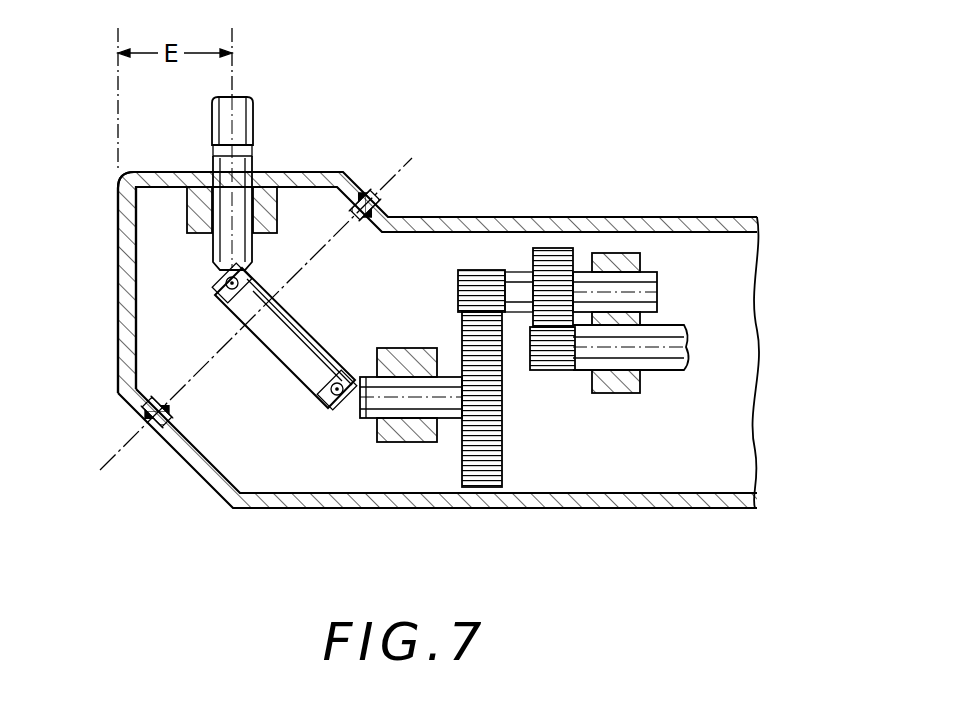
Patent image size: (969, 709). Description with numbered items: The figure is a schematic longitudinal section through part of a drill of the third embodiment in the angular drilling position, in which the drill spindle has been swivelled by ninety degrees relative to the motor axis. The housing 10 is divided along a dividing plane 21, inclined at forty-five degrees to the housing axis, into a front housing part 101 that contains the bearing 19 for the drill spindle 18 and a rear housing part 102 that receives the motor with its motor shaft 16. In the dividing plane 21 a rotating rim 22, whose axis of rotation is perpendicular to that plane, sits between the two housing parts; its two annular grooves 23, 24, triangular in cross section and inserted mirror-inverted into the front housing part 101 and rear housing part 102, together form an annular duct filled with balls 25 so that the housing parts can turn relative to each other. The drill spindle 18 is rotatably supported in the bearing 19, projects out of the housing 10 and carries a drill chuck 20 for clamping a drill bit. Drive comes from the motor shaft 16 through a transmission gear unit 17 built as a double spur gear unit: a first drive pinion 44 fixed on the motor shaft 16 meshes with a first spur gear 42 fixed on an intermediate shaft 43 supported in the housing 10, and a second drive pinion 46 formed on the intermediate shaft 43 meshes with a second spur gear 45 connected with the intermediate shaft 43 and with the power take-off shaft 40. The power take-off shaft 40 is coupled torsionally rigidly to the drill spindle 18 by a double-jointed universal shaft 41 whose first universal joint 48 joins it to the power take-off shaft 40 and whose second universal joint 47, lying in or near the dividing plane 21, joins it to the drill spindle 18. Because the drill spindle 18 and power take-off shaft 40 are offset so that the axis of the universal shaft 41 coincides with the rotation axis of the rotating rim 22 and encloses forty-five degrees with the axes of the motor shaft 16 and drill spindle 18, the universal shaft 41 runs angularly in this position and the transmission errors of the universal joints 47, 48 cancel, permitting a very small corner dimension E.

The housing 10 is at (406, 340).
The motor shaft 16 is at (673, 354).
The transmission gear unit 17 is at (431, 463).
The drill spindle 18 is at (223, 175).
The bearing 19 is at (200, 210).
The drill chuck 20 is at (245, 124).
The dividing plane 21 is at (393, 175).
The rotating rim 22 is at (368, 214).
The annular groove 23 is at (150, 400).
The annular groove 24 is at (168, 417).
The balls 25 is at (144, 410).
The power take-off shaft 40 is at (403, 440).
The double-jointed universal shaft 41 is at (310, 368).
The first spur gear 42 is at (558, 247).
The intermediate shaft 43 is at (644, 283).
The first drive pinion 44 is at (555, 355).
The second spur gear 45 is at (483, 478).
The second drive pinion 46 is at (485, 272).
The second universal joint 47 is at (223, 280).
The first universal joint 48 is at (339, 395).
The front housing part 101 is at (120, 281).
The rear housing part 102 is at (702, 500).